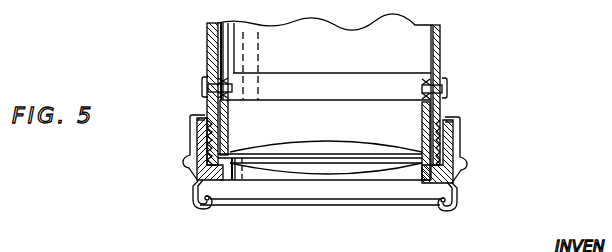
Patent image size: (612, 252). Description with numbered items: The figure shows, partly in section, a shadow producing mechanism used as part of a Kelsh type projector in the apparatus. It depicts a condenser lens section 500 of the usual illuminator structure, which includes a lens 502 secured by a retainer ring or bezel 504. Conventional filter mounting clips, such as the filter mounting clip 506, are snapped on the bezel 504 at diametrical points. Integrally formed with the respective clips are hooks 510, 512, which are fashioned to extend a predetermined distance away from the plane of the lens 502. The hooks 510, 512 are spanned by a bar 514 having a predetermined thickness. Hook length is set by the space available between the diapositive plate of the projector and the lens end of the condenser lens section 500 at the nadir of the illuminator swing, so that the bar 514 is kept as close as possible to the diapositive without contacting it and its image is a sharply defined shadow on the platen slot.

The condenser lens section 500 is at (418, 45).
The lens 502 is at (343, 143).
The retainer ring or bezel 504 is at (447, 136).
The filter mounting clip 506 is at (192, 128).
The hook 510 is at (187, 173).
The hook 512 is at (463, 178).
The bar 514 is at (297, 203).